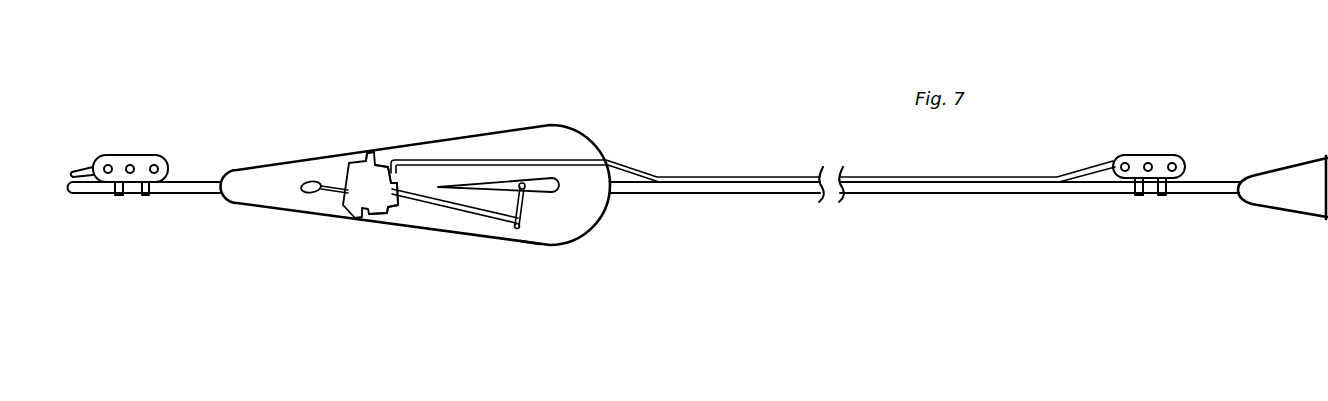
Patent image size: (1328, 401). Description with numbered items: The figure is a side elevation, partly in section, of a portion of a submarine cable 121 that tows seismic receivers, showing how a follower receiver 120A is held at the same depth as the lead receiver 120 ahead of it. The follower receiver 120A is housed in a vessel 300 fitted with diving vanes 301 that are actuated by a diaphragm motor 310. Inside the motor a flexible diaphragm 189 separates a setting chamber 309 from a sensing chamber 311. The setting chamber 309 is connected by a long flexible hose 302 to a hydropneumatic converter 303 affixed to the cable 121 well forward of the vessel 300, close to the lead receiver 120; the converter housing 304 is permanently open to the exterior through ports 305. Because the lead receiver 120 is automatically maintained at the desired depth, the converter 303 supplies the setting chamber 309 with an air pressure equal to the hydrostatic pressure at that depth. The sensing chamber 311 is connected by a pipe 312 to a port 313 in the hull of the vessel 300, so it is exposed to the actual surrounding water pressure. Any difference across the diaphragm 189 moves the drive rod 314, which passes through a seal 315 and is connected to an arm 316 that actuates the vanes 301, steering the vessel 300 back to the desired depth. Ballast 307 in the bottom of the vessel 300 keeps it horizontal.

The lead receiver 120 is at (1287, 225).
The follower receiver 120A is at (668, 187).
The cable 121 is at (188, 194).
The flexible diaphragm 189 is at (387, 158).
The vessel 300 is at (463, 138).
The diving vanes 301 is at (547, 192).
The flexible hose 302 is at (645, 176).
The hydropneumatic converter 303 is at (1122, 160).
The housing 304 is at (1170, 157).
The ports 305 is at (1152, 160).
The ballast 307 is at (567, 237).
The setting chamber 309 is at (377, 211).
The diaphragm motor 310 is at (368, 152).
The sensing chamber 311 is at (364, 157).
The pipe 312 is at (329, 178).
The port 313 is at (300, 184).
The drive rod 314 is at (467, 213).
The seal 315 is at (392, 207).
The arm 316 is at (528, 214).